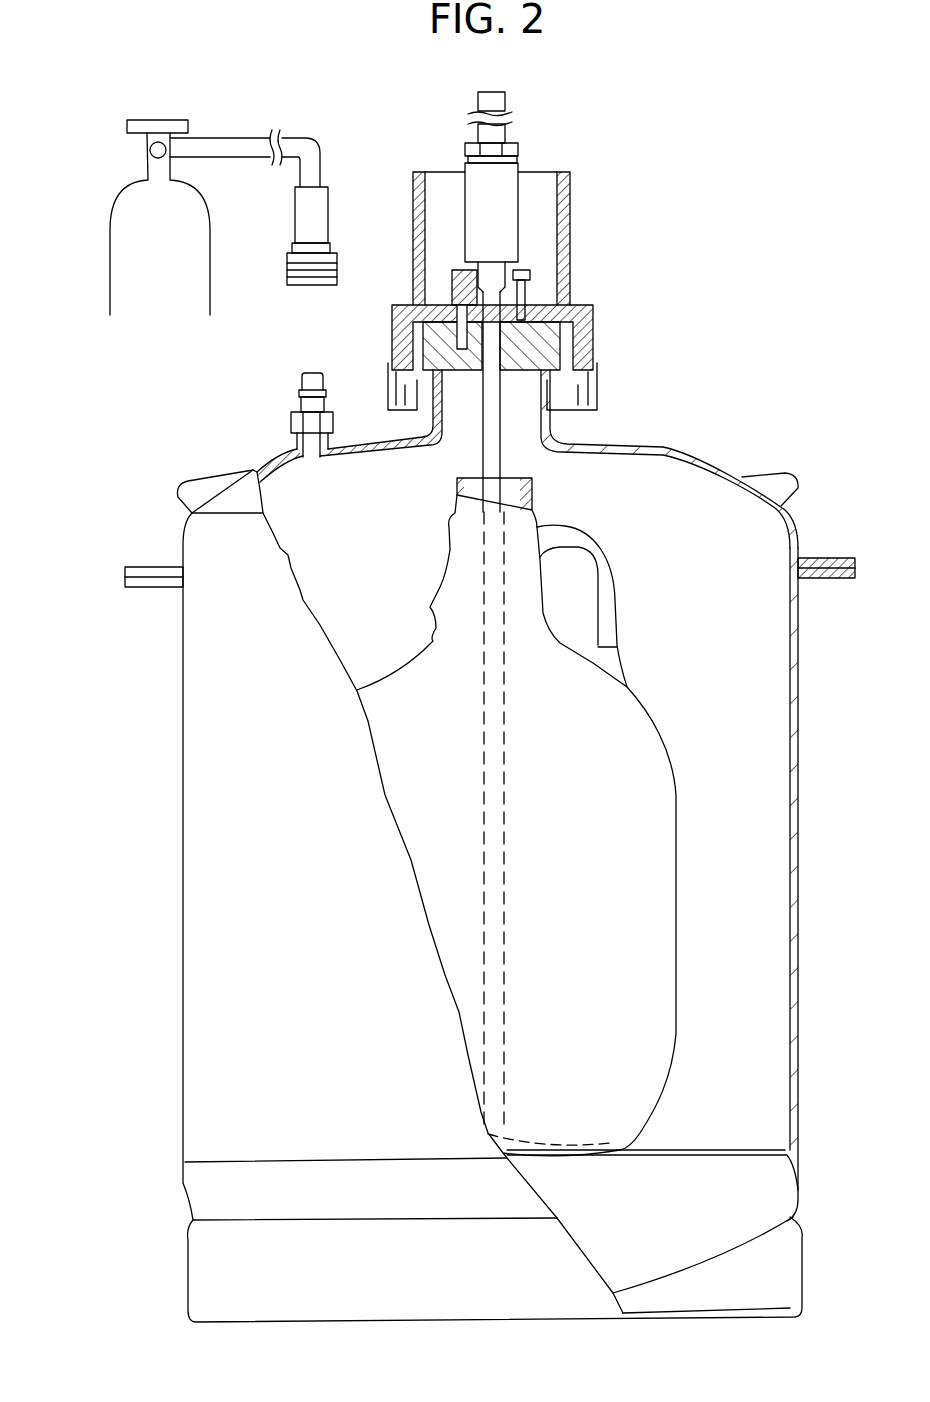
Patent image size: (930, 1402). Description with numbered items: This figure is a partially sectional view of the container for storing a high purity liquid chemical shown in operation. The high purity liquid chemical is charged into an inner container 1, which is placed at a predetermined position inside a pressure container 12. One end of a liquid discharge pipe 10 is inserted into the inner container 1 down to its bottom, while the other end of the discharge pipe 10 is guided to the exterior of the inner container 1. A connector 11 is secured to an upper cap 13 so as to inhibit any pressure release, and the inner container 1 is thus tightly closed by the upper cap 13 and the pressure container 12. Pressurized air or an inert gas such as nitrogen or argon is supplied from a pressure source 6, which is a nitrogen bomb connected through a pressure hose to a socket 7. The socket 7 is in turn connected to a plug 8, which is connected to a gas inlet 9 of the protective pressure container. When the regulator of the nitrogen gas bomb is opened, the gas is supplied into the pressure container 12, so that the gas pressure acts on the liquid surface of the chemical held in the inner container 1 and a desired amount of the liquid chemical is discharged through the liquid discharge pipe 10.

The inner container 1 is at (637, 740).
The pressure source 6 is at (143, 272).
The socket 7 is at (320, 213).
The plug 8 is at (296, 387).
The gas inlet 9 is at (312, 453).
The liquid discharge pipe 10 is at (497, 442).
The connector 11 is at (563, 223).
The pressure container 12 is at (217, 702).
The upper cap 13 is at (208, 537).